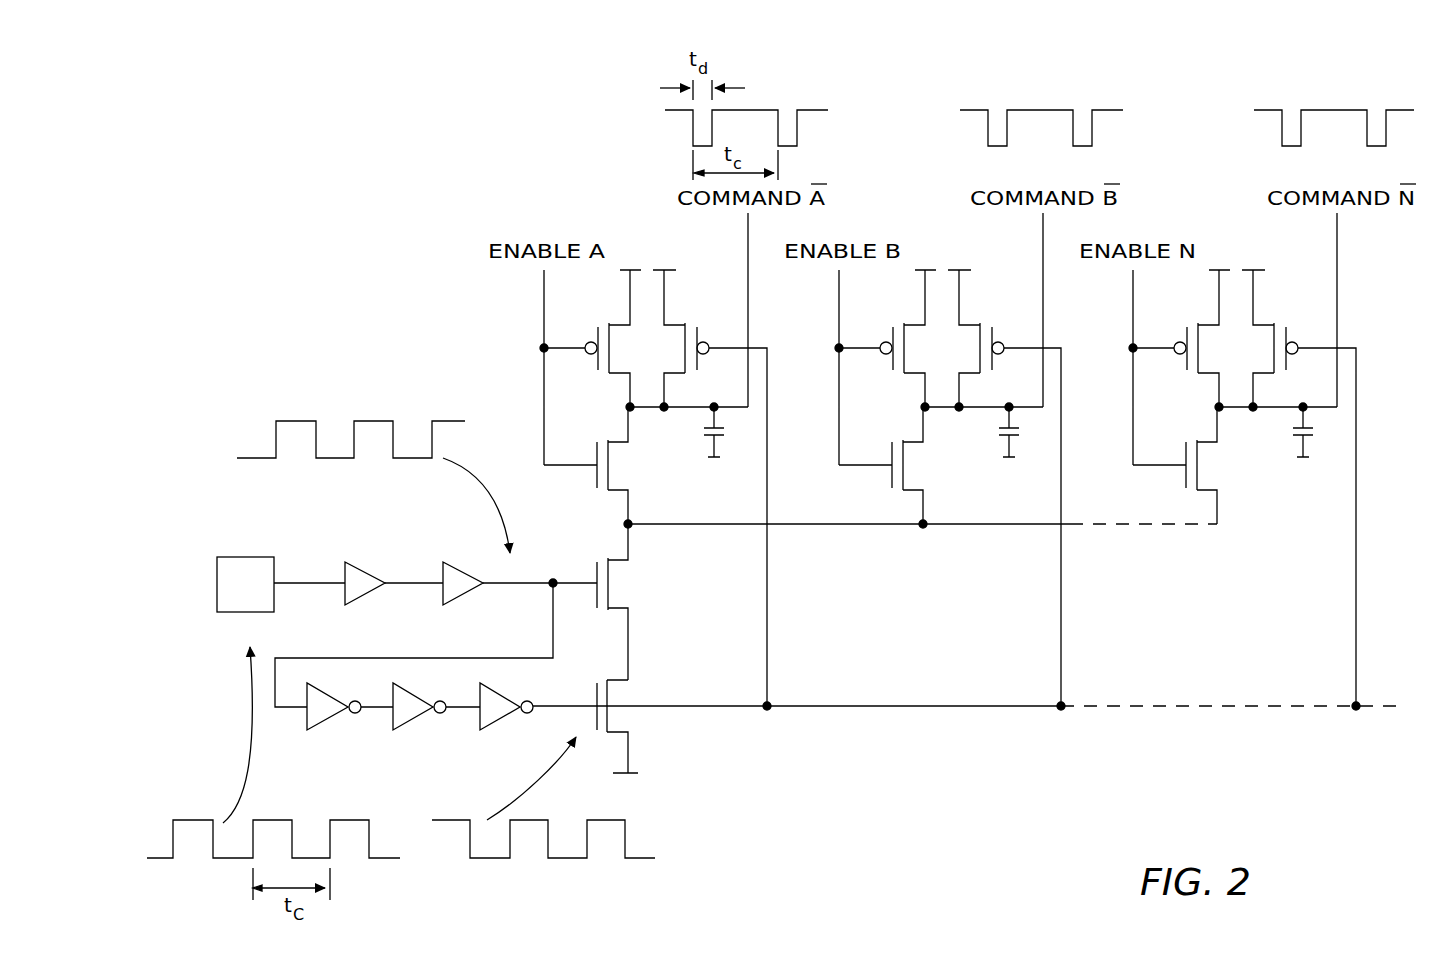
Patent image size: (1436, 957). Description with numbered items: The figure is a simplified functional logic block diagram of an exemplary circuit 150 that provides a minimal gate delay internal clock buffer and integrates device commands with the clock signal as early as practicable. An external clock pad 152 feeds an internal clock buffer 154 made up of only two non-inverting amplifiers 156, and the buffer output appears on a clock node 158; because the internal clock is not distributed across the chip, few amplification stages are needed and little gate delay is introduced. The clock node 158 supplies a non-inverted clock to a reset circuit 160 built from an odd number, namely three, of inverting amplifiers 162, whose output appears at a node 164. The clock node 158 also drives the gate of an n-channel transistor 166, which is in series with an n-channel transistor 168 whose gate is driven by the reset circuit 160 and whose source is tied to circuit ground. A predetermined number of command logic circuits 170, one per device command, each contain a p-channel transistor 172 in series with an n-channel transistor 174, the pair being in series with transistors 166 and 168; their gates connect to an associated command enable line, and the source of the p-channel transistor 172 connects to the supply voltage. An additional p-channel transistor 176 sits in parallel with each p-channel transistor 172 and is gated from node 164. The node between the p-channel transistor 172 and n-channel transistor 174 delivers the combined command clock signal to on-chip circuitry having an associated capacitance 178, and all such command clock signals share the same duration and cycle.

The circuit 150 is at (945, 800).
The external clock pad 152 is at (252, 557).
The internal clock buffer 154 is at (408, 562).
The non-inverting amplifiers 156 is at (350, 605).
The clock node 158 is at (554, 582).
The reset circuit 160 is at (380, 738).
The inverting amplifiers 162 is at (315, 730).
The node 164 is at (707, 706).
The n-channel transistor 166 is at (622, 607).
The n-channel transistor 168 is at (619, 681).
The command logic circuits 170 is at (1248, 254).
The p-channel transistor 172 is at (620, 322).
The n-channel transistor 174 is at (618, 438).
The additional p-channel transistor 176 is at (677, 322).
The capacitance 178 is at (707, 421).